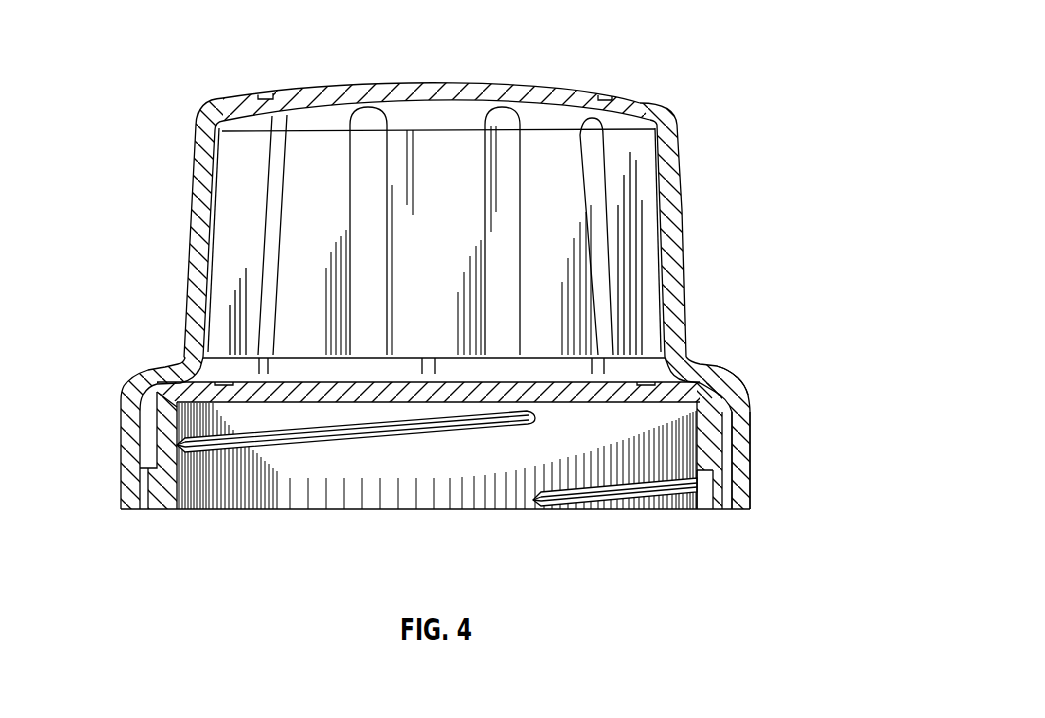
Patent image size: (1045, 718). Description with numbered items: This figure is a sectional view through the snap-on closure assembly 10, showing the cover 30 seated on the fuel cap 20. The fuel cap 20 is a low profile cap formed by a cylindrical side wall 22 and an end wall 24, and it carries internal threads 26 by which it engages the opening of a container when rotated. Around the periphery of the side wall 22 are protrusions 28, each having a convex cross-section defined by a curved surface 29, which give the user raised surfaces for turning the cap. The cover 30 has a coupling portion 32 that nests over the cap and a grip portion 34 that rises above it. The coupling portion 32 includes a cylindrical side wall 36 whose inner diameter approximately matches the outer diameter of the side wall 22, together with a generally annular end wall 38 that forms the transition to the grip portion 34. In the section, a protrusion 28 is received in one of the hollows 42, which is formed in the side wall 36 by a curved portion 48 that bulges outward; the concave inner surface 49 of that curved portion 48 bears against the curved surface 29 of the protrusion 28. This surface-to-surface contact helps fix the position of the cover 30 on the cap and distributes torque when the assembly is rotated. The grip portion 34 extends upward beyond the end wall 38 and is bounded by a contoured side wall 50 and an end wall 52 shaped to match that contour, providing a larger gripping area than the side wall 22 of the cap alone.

The closure assembly 10 is at (695, 56).
The fuel cap 20 is at (619, 515).
The cylindrical side wall 22 is at (703, 511).
The end wall 24 is at (547, 390).
The internal threads 26 is at (268, 443).
The protrusions 28 is at (738, 464).
The curved surface 29 is at (741, 432).
The cover 30 is at (679, 101).
The coupling portion 32 is at (112, 460).
The grip portion 34 is at (186, 262).
The cylindrical side wall 36 is at (738, 411).
The annular end wall 38 is at (701, 358).
The hollows 42 is at (734, 522).
The curved portion 48 is at (714, 457).
The inner surface 49 is at (727, 498).
The contoured side wall 50 is at (683, 220).
The end wall 52 is at (493, 92).